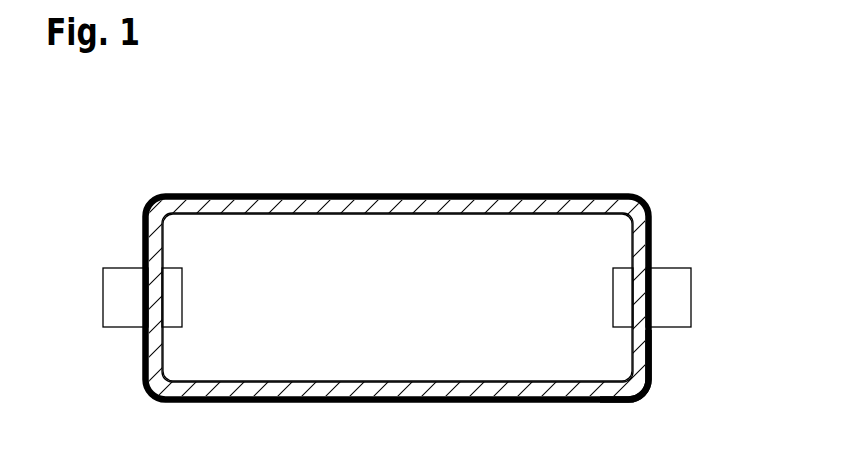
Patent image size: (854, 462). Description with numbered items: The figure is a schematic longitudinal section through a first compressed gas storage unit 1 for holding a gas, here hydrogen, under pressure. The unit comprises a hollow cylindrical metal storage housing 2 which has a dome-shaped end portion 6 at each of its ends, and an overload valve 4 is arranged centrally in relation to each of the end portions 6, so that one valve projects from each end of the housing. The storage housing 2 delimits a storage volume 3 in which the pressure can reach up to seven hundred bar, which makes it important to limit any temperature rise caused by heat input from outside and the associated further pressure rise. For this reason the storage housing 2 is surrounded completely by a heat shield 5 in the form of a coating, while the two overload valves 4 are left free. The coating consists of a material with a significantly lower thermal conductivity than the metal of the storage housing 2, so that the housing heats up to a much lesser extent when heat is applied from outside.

The compressed gas storage unit 1 is at (657, 133).
The storage housing 2 is at (316, 205).
The storage volume 3 is at (461, 300).
The overload valve 4 is at (115, 296).
The heat shield 5 is at (444, 196).
The end portion 6 is at (650, 349).